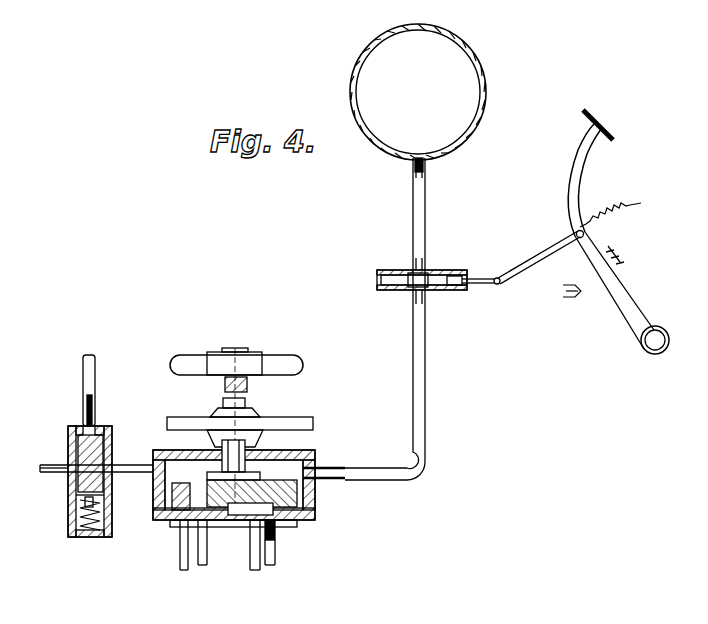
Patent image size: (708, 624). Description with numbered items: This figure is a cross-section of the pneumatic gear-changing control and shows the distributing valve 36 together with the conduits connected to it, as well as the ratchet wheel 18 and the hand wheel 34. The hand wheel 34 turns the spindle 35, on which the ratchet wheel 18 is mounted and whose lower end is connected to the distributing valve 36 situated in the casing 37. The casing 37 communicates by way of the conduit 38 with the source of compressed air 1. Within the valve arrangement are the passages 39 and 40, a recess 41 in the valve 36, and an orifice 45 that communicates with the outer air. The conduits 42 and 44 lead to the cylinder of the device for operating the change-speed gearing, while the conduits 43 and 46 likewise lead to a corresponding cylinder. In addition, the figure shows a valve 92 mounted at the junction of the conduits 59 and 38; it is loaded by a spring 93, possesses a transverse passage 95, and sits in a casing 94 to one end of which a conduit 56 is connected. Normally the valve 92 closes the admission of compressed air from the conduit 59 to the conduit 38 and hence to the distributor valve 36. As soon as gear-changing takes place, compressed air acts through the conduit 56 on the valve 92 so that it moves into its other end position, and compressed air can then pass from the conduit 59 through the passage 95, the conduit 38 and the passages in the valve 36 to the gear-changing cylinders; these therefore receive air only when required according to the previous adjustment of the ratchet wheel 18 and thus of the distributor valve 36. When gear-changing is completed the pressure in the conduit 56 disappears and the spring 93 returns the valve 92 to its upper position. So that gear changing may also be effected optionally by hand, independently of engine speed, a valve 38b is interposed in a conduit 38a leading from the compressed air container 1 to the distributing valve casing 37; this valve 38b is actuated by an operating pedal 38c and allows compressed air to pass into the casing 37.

The source of compressed air 1 is at (452, 125).
The conduit 38a is at (425, 440).
The valve 38b is at (455, 278).
The operating pedal 38c is at (563, 186).
The hand wheel 34 is at (278, 357).
The spindle 35 is at (252, 402).
The ratchet wheel 18 is at (312, 418).
The casing 37 is at (318, 457).
The distributing valve 36 is at (293, 494).
The passage 39 is at (185, 490).
The recess 41 is at (297, 523).
The orifice 45 is at (237, 520).
The conduit 42 is at (180, 563).
The conduit 43 is at (199, 562).
The conduit 44 is at (275, 547).
The conduit 46 is at (257, 563).
The passage 40 is at (170, 513).
The conduit 38 is at (127, 466).
The conduit 59 is at (46, 486).
The transverse passage 95 is at (82, 455).
The valve 92 is at (105, 483).
The conduit 56 is at (95, 390).
The spring 93 is at (80, 530).
The casing 94 is at (70, 522).